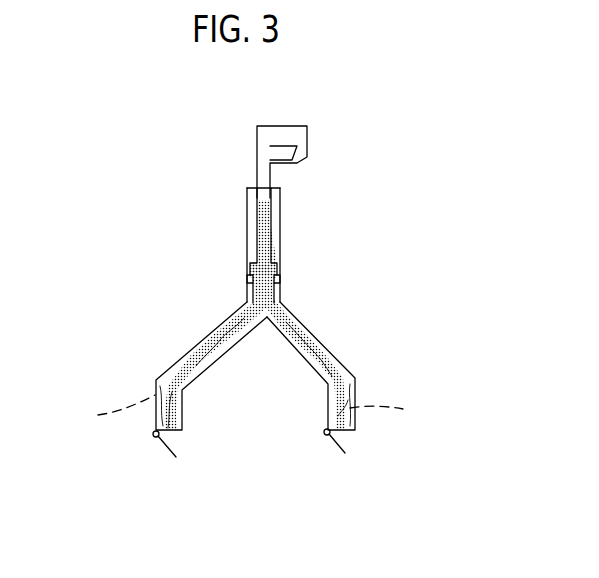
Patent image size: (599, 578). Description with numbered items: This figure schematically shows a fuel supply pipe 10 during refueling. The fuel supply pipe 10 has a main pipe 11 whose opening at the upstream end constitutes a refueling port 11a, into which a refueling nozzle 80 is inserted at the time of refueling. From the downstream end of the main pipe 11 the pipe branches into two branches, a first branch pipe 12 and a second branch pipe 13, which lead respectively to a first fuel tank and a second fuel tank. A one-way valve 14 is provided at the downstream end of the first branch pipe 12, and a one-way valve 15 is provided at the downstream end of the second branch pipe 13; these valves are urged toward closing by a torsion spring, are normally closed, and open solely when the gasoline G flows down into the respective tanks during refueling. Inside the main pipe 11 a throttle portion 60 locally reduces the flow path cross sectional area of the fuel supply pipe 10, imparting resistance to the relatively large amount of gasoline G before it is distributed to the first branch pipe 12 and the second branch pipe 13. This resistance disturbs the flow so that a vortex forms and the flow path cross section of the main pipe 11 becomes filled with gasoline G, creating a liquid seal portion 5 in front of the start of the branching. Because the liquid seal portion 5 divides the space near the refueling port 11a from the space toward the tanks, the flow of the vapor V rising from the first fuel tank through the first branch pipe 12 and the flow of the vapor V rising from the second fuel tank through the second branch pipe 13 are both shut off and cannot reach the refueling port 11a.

The fuel supply pipe 10 is at (284, 245).
The main pipe 11 is at (282, 213).
The refueling port 11a is at (254, 188).
The refueling nozzle 80 is at (307, 138).
The gasoline G is at (258, 223).
The liquid seal portion 5 is at (282, 267).
The throttle portion 60 is at (247, 278).
The second branch pipe 13 is at (202, 340).
The first branch pipe 12 is at (323, 346).
The one-way valve 15 is at (160, 440).
The one-way valve 14 is at (330, 437).
The vapor V is at (251, 412).